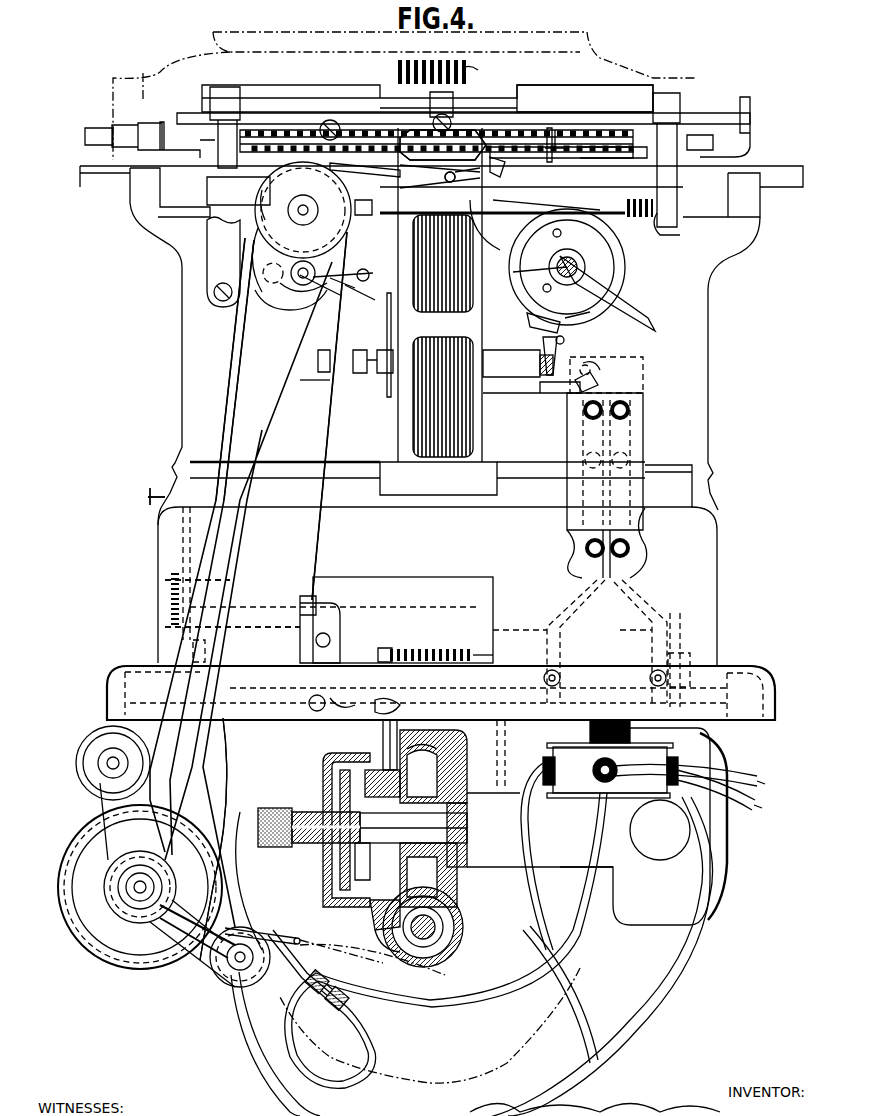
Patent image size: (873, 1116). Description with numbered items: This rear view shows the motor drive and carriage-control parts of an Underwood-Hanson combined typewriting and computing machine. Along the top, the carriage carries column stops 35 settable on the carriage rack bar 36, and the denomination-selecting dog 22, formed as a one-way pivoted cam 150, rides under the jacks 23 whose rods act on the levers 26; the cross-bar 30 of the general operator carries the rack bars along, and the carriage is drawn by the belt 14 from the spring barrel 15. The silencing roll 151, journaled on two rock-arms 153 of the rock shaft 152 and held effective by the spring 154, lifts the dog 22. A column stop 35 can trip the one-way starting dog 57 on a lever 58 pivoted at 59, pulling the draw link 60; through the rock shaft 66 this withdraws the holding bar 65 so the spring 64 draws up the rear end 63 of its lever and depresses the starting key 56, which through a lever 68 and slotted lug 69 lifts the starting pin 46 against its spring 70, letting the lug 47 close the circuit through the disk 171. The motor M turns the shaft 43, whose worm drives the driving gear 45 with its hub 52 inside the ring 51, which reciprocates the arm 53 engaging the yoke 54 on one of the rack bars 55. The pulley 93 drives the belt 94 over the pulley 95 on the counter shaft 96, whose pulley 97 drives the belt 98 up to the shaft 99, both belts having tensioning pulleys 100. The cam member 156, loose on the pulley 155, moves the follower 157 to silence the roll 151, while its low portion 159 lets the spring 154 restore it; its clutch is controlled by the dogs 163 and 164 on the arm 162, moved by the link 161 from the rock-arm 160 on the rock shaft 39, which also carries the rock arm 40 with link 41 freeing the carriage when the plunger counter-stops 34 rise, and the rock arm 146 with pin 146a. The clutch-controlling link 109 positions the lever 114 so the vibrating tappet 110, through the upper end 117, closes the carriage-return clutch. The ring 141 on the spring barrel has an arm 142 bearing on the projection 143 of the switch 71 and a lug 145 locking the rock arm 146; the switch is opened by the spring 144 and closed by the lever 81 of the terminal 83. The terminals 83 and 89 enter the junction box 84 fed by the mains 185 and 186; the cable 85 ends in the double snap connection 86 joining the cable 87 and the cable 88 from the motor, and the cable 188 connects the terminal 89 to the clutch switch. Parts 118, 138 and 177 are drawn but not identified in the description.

The denomination-selecting dog 22 is at (399, 74).
The jacks 23 is at (470, 70).
The type guide 177 is at (441, 112).
The one-way pivoted cam 150 is at (563, 94).
The carriage end bracket 118 is at (675, 90).
The column stops 35 is at (310, 130).
The silencing roll 151 is at (443, 145).
The pivot 59 is at (440, 174).
The lever 58 is at (467, 174).
The one-way starting dog 57 is at (503, 168).
The carriage rack bar 36 is at (610, 158).
The belt 14 is at (530, 208).
The rock shaft 152 is at (600, 208).
The rock-arms 153 is at (510, 215).
The pulley 155 is at (238, 191).
The cam member 156 is at (303, 210).
The low portion 159 is at (272, 202).
The stop 138 is at (362, 198).
The tappet 110 is at (304, 210).
The follower 157 is at (258, 228).
The shaft 99 is at (303, 215).
The dog 164 is at (223, 262).
The dog 163 is at (333, 269).
The spring barrel 15 is at (512, 242).
The spring 154 is at (668, 232).
The ring 141 is at (522, 284).
The lug 145 is at (526, 324).
The pin 146a is at (589, 318).
The rock arm 146 is at (545, 344).
The arm 142 is at (565, 342).
The bell crank projection 143 is at (598, 366).
The lever 81 is at (645, 364).
The circuit closer 71 is at (645, 382).
The upper end 117 is at (305, 305).
The arm 162 is at (329, 298).
The link 161 is at (351, 312).
The link 41 is at (392, 324).
The lever 114 is at (333, 361).
The clutch-controlling link 109 is at (313, 384).
The rock-arm 160 is at (373, 371).
The rock arm 40 is at (416, 384).
The rock shaft 39 is at (531, 372).
The spring 144 is at (585, 405).
The plunger counter-stops 34 is at (428, 418).
The draw link 60 is at (338, 436).
The starting key 56 is at (152, 491).
The belt 98 is at (243, 530).
The spring 64 is at (170, 589).
The rear end 63 is at (172, 631).
The holding bar 65 is at (268, 622).
The rack bars 55 is at (207, 650).
The rock shaft 66 is at (331, 642).
The levers 26 is at (408, 650).
The cross-bar 30 is at (448, 645).
The electric terminal 83 is at (590, 575).
The terminal 89 is at (625, 570).
The spring 70 is at (337, 700).
The slotted lug 69 is at (409, 707).
The yoke 54 is at (690, 708).
The lever 68 is at (234, 839).
The lug 47 is at (338, 755).
The starting pin 46 is at (378, 748).
The driving gear 45 is at (440, 770).
The junction box 84 is at (580, 748).
The arm 53 is at (688, 727).
The main 185 is at (757, 778).
The main 186 is at (755, 806).
The tensioning pulleys 100 is at (80, 785).
The hub 52 is at (413, 828).
The shaft 43 is at (468, 825).
The cable 87 is at (298, 879).
The disk 171 is at (340, 886).
The pulley 97 is at (104, 885).
The counter shaft 96 is at (138, 908).
The belt 94 is at (298, 938).
The ring 51 is at (365, 900).
The pulley 93 is at (383, 948).
The pulley 95 is at (160, 970).
The double snap connection 86 is at (322, 1002).
The cable 85 is at (508, 978).
The motor M is at (543, 1022).
The cable 88 is at (378, 1052).
The cable 188 is at (262, 1080).